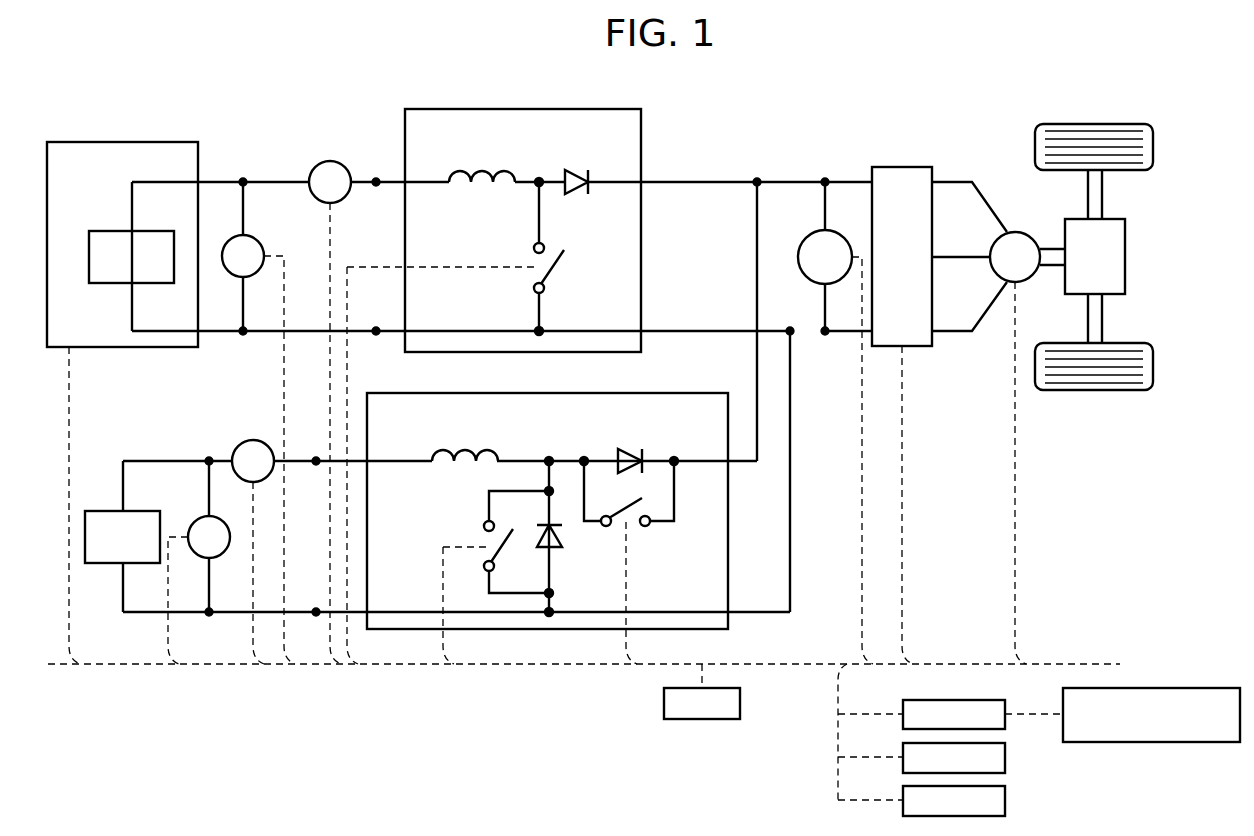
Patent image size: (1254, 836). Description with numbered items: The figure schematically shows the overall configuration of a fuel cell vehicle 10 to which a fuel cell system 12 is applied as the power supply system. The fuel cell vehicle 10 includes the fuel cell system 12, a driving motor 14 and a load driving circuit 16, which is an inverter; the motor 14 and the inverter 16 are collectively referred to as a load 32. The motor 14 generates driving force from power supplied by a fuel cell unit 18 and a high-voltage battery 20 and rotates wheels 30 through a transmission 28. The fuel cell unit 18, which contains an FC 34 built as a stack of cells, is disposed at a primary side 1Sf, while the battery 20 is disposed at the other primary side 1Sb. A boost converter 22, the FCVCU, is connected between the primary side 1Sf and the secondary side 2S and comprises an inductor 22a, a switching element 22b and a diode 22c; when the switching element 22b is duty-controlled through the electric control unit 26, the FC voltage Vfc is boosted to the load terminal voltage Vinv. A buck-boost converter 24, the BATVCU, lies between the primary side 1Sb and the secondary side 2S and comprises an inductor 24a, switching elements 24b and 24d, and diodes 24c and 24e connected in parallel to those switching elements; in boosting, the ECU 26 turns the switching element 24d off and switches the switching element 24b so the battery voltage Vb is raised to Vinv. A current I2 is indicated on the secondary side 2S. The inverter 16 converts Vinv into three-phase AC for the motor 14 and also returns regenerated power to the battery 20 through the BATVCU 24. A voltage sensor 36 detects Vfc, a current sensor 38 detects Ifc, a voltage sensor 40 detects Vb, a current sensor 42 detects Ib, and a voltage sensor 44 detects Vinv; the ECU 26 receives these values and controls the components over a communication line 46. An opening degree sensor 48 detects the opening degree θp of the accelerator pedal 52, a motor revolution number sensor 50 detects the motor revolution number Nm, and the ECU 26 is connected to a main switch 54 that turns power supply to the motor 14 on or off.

The fuel cell vehicle 10 is at (308, 134).
The fuel cell system 12 is at (766, 130).
The driving motor 14 is at (1015, 232).
The load driving circuit 16 is at (902, 167).
The fuel cell unit 18 is at (176, 142).
The high-voltage battery 20 is at (133, 511).
The boost converter 22 is at (641, 244).
The inductor 22a is at (485, 168).
The switching element 22b is at (534, 260).
The diode 22c is at (577, 196).
The buck-boost converter 24 is at (728, 569).
The inductor 24a is at (472, 446).
The switching element 24b is at (485, 546).
The diode 24c is at (563, 542).
The switching element 24d is at (633, 530).
The diode 24e is at (630, 448).
The electric control unit 26 is at (698, 719).
The transmission 28 is at (1125, 229).
The wheels 30 is at (1148, 166).
The load 32 is at (997, 133).
The fuel cell 34 is at (108, 232).
The voltage sensor 36 is at (262, 248).
The current sensor 38 is at (343, 164).
The voltage sensor 40 is at (228, 549).
The current sensor 42 is at (250, 440).
The voltage sensor 44 is at (800, 245).
The communication line 46 is at (99, 656).
The opening degree sensor 48 is at (987, 700).
The motor revolution number sensor 50 is at (1005, 757).
The accelerator pedal 52 is at (1195, 688).
The main switch 54 is at (1005, 800).
The primary side 1Sf is at (376, 188).
The other primary side 1Sb is at (316, 466).
The secondary side 2S is at (757, 178).
The second side current I2 is at (812, 180).